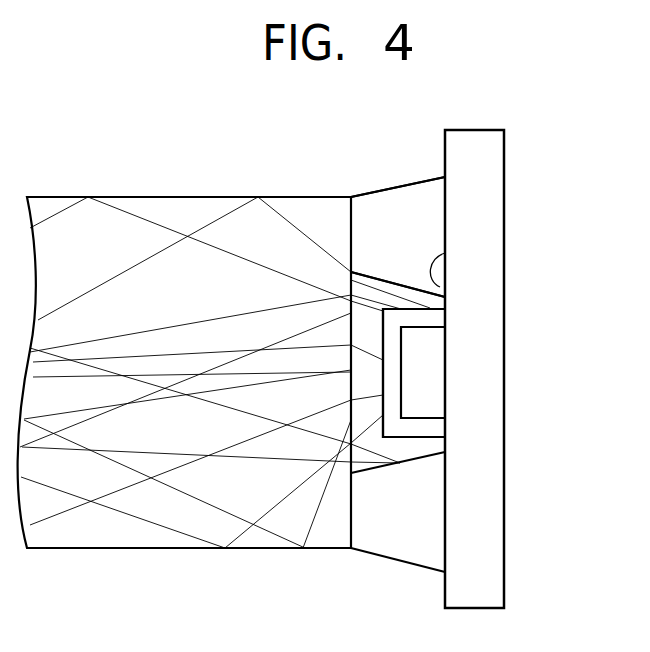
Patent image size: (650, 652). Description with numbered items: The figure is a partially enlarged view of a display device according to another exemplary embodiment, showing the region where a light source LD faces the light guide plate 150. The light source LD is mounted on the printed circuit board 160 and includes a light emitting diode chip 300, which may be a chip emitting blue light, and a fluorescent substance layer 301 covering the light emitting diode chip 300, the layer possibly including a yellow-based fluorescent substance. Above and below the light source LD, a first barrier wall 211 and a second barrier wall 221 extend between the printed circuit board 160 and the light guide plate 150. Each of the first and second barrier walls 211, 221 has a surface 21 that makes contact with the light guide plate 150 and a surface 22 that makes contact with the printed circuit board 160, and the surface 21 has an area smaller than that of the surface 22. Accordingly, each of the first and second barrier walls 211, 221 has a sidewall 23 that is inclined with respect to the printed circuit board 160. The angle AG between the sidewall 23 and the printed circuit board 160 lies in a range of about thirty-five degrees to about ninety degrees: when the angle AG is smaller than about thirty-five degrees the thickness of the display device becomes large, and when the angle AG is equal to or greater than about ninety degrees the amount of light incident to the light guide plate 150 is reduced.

The light guide plate 150 is at (193, 205).
The surface 21 is at (363, 230).
The first barrier wall 211 is at (403, 197).
The printed circuit board 160 is at (493, 190).
The surface 22 is at (447, 220).
The angle AG is at (445, 253).
The sidewall 23 is at (412, 308).
The light emitting diode chip 300 is at (435, 377).
The fluorescent substance layer 301 is at (435, 428).
The light source LD is at (583, 363).
The second barrier wall 221 is at (432, 508).